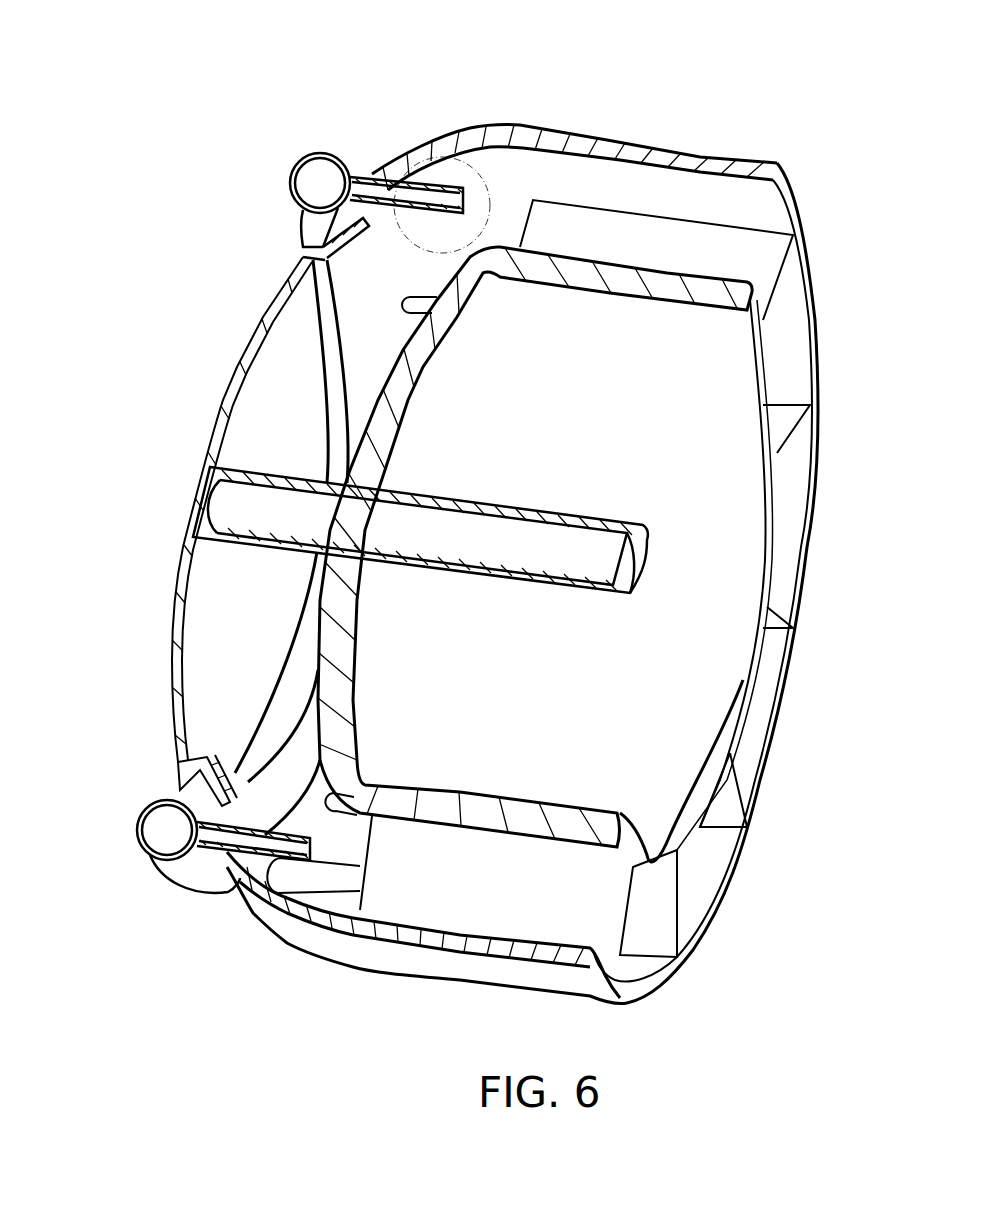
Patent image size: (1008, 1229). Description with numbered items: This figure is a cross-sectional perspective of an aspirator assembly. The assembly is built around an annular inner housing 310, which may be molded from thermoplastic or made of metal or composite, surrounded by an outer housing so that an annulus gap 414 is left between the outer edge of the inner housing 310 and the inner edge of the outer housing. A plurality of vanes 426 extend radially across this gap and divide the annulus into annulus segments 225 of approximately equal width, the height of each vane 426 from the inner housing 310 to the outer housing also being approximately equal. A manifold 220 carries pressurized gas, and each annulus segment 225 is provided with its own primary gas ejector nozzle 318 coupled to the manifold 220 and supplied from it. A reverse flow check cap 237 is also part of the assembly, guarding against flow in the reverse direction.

The annulus gap 414 is at (470, 167).
The reverse flow check cap 237 is at (297, 440).
The inner housing 310 is at (780, 395).
The annulus segment 225 is at (760, 713).
The manifold 220 is at (150, 807).
The primary gas ejector nozzle 318 is at (230, 840).
The vane 426 is at (687, 923).